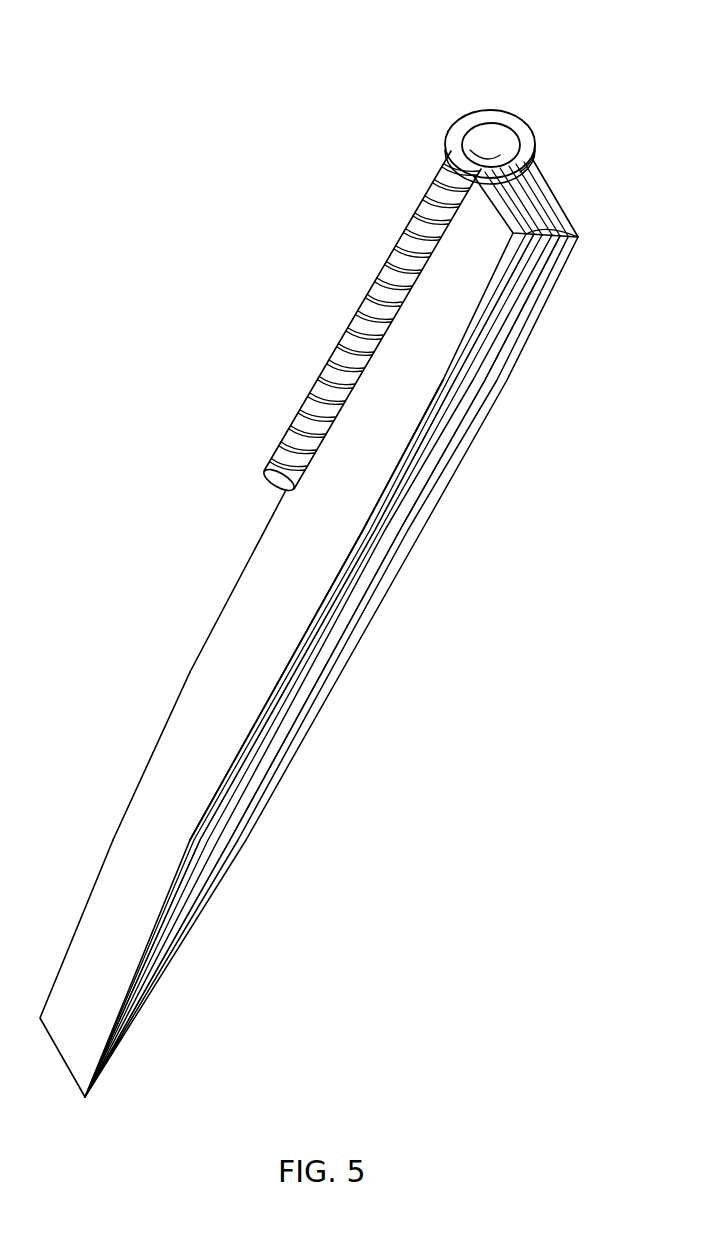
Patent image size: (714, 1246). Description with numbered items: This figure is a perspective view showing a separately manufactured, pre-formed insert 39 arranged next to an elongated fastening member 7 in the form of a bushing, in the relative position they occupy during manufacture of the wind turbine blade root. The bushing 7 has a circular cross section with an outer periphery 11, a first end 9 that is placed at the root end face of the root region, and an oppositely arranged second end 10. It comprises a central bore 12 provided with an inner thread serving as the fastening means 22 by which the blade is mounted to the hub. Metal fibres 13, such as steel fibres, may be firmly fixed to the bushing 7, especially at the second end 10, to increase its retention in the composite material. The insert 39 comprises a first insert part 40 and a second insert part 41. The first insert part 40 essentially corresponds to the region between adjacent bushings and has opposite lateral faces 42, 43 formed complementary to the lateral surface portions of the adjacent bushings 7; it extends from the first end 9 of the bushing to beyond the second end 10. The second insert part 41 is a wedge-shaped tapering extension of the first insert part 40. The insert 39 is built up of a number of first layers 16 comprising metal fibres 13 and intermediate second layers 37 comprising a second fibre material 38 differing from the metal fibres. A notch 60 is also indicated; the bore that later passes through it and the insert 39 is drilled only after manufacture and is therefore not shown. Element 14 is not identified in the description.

The elongated fastening member 7 is at (380, 264).
The first end 9 is at (440, 178).
The second end 10 is at (273, 460).
The outer periphery 11 is at (405, 217).
The central bore 12 is at (492, 150).
The metal fibres 13 is at (538, 272).
The blade body 14 is at (292, 532).
The first layers 16 is at (538, 272).
The fastening means 22 is at (480, 137).
The intermediate second layers 37 is at (485, 372).
The second fibre material 38 is at (485, 372).
The insert 39 is at (315, 403).
The first insert part 40 is at (413, 323).
The second insert part 41 is at (130, 812).
The lateral face 42 is at (585, 255).
The lateral face 43 is at (532, 128).
The notch 60 is at (400, 547).